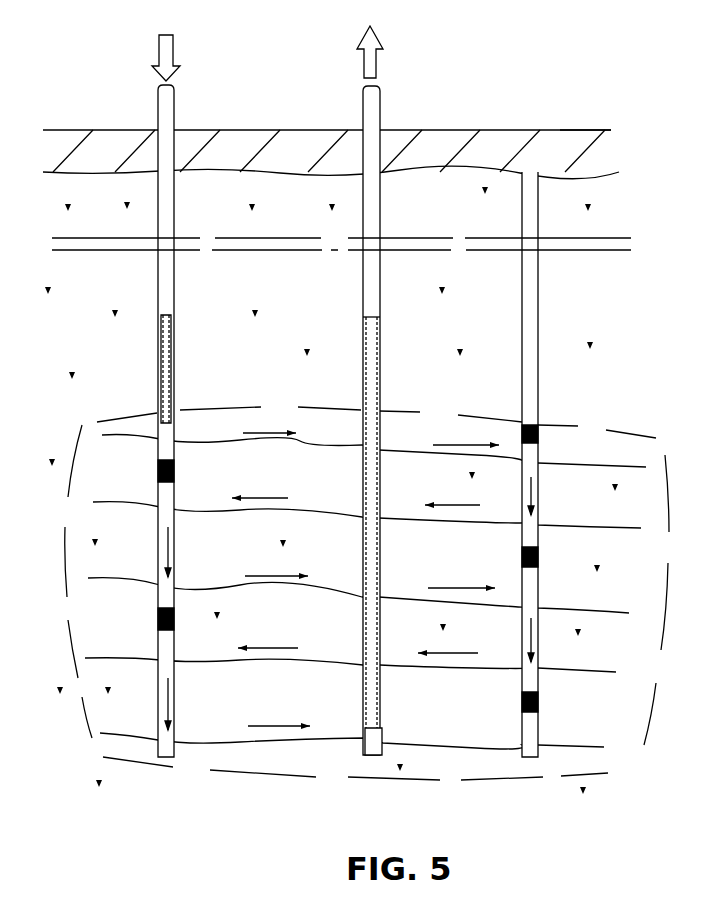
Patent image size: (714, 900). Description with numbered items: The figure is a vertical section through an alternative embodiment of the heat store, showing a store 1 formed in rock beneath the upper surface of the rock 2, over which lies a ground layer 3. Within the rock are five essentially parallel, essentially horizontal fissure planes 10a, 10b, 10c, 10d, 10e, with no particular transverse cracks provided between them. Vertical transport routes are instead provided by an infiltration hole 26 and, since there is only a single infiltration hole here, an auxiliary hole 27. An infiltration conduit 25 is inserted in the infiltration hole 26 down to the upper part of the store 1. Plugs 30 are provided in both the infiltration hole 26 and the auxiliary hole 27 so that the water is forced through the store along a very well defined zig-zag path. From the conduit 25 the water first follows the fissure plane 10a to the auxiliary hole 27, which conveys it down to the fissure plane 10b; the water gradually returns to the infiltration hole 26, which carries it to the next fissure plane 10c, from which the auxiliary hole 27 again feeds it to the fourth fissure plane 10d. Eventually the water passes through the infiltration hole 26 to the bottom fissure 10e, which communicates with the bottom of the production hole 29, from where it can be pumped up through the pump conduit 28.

The store 1 is at (673, 555).
The upper surface of the rock 2 is at (603, 167).
The ground layer 3 is at (296, 143).
The fissure plane 10a is at (351, 443).
The fissure plane 10b is at (352, 512).
The fissure plane 10c is at (352, 590).
The fissure plane 10d is at (355, 660).
The bottom fissure 10e is at (336, 736).
The infiltration conduit 25 is at (172, 122).
The infiltration hole 26 is at (175, 557).
The auxiliary hole 27 is at (531, 595).
The pump conduit 28 is at (375, 125).
The production hole 29 is at (373, 743).
The plugs 30 is at (538, 700).